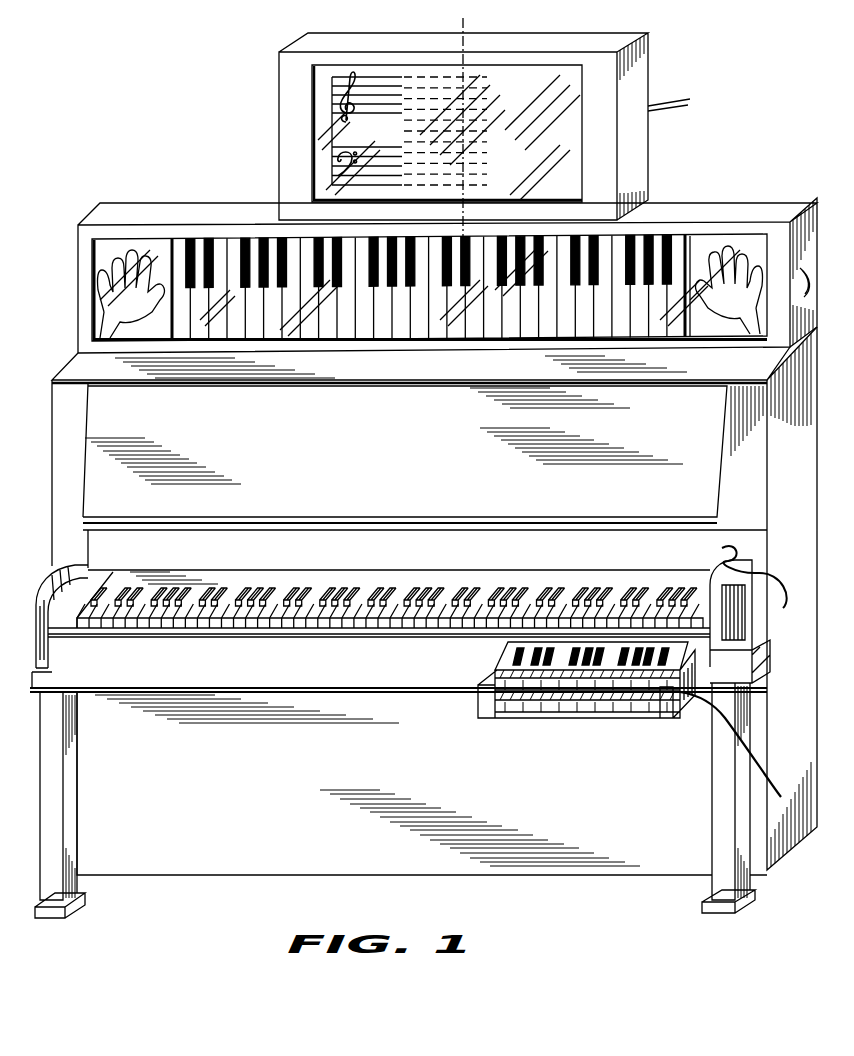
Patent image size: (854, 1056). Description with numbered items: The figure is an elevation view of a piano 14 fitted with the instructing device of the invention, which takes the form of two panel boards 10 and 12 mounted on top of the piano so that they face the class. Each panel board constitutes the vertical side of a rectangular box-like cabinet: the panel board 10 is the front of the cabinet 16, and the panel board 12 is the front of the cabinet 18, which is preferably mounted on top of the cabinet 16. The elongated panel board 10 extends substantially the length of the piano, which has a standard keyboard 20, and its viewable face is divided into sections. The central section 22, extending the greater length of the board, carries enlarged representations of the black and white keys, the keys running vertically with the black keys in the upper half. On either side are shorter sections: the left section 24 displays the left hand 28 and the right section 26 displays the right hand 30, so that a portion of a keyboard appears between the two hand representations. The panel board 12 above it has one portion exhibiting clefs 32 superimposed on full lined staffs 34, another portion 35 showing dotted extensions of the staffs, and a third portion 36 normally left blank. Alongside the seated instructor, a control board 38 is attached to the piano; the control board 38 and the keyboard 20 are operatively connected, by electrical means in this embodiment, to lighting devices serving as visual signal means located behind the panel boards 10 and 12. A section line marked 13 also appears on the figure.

The panel board 10 is at (397, 337).
The panel board 12 is at (477, 187).
The section line 13 is at (484, 25).
The piano 14 is at (296, 777).
The cabinet 16 is at (212, 213).
The cabinet 18 is at (307, 43).
The keyboard 20 is at (376, 590).
The central section 22 is at (458, 307).
The left section 24 is at (100, 316).
The right section 26 is at (697, 318).
The left hand 28 is at (120, 299).
The right hand 30 is at (727, 303).
The clefs 32 is at (333, 162).
The full lined staffs 34 is at (380, 122).
The portion showing staff extensions 35 is at (485, 110).
The third portion 36 is at (562, 132).
The control board 38 is at (478, 702).